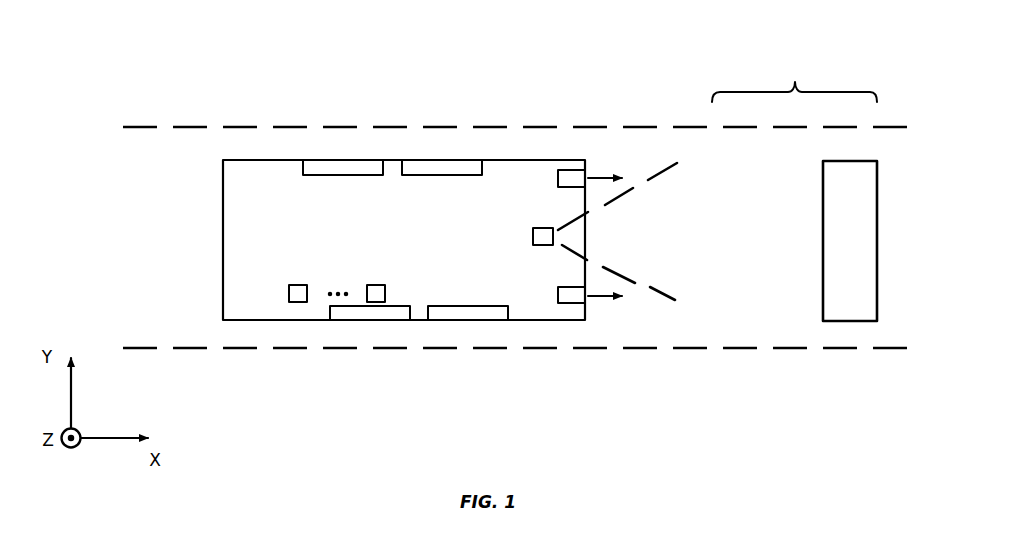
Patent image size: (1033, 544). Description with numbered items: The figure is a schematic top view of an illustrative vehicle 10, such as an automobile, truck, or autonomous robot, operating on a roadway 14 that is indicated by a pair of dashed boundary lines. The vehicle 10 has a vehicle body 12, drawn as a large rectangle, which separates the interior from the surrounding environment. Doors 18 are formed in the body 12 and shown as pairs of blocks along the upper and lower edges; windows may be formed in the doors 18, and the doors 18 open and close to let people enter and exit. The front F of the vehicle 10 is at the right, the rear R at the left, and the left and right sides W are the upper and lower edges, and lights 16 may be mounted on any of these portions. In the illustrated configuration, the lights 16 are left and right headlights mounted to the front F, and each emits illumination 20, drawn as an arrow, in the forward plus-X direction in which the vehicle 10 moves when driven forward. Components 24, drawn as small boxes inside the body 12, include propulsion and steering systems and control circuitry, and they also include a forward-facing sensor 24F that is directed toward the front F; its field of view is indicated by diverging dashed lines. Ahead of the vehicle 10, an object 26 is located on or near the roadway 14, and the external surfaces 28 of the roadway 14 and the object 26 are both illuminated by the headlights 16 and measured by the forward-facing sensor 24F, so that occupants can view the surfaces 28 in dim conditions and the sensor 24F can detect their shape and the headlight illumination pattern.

The vehicle 10 is at (298, 86).
The vehicle body 12 is at (223, 280).
The roadway 14 is at (641, 127).
The lights 16 is at (558, 178).
The doors 18 is at (355, 175).
The illumination 20 is at (605, 171).
The components 24 is at (298, 285).
The forward-facing sensor 24F is at (533, 237).
The object 26 is at (863, 264).
The external surfaces 28 is at (794, 77).
The sides W is at (261, 104).
The rear R is at (188, 213).
The front F is at (636, 232).